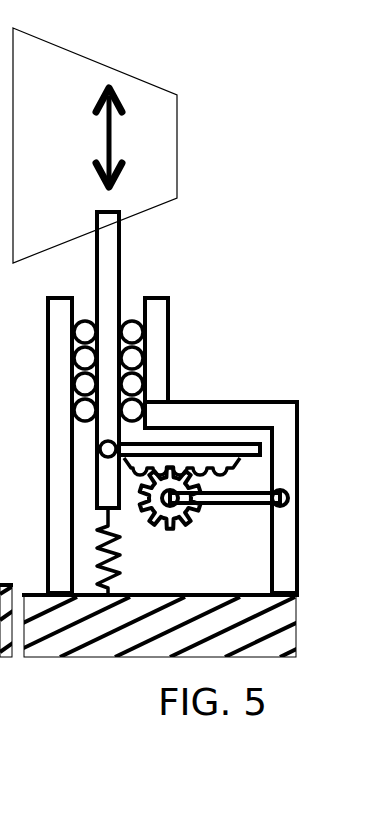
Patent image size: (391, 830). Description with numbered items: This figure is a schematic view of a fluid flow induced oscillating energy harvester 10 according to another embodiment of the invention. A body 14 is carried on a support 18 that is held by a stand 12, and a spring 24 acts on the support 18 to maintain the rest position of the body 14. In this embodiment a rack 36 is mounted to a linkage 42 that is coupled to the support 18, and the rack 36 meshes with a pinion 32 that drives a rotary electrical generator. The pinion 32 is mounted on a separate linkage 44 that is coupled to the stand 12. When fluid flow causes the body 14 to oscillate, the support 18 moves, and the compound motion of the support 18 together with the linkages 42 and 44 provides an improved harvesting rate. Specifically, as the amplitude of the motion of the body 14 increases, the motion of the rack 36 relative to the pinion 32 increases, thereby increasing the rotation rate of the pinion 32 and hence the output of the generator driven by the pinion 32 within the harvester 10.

The oscillating energy harvester 10 is at (231, 247).
The stand 12 is at (170, 342).
The body 14 is at (177, 150).
The support 18 is at (122, 276).
The spring 24 is at (115, 568).
The pinion 32 is at (177, 530).
The rack 36 is at (138, 482).
The linkage 42 is at (250, 463).
The linkage 44 is at (220, 508).